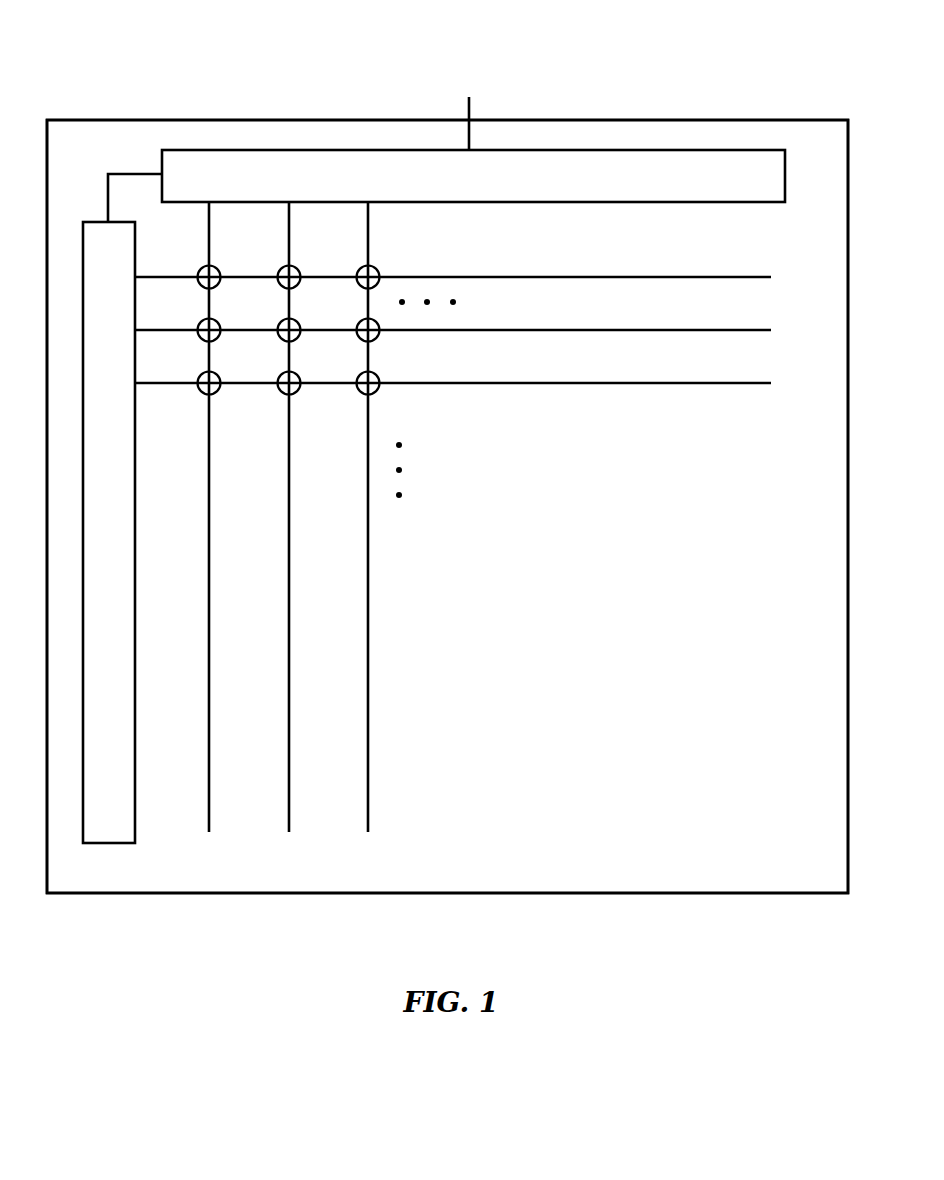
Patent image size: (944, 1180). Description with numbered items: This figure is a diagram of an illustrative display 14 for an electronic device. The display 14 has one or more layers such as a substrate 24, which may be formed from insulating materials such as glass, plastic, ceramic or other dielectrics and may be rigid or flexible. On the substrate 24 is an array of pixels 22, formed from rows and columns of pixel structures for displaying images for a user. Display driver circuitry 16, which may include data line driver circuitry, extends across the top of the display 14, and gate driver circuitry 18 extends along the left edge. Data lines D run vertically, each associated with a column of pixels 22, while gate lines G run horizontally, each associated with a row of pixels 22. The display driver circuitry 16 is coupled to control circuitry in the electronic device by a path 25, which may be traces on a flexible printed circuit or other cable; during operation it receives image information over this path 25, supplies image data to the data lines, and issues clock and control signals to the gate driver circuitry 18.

The display 14 is at (718, 76).
The display driver circuitry 16 is at (593, 150).
The gate driver circuitry 18 is at (137, 243).
The pixels 22 is at (380, 267).
The substrate 24 is at (828, 120).
The path 25 is at (472, 108).